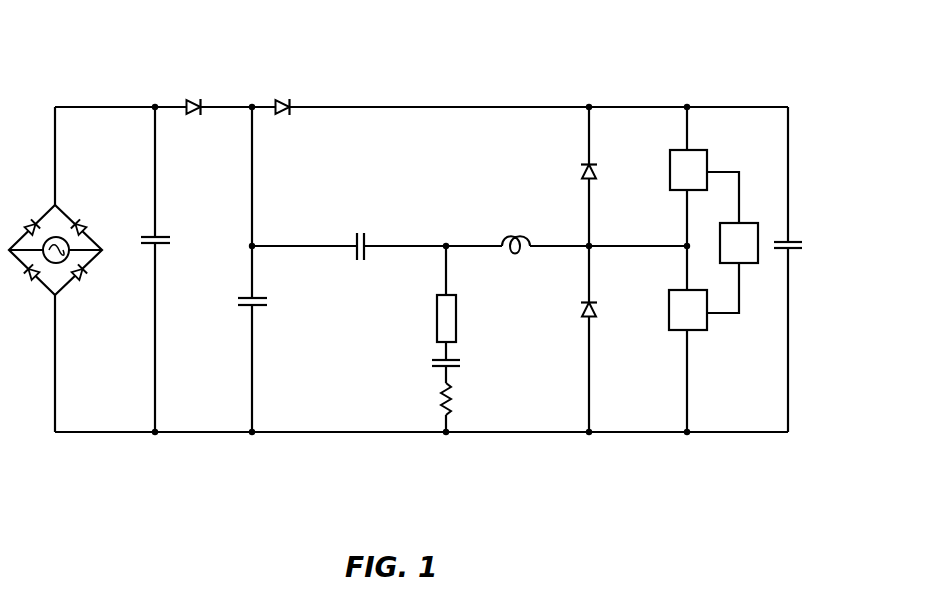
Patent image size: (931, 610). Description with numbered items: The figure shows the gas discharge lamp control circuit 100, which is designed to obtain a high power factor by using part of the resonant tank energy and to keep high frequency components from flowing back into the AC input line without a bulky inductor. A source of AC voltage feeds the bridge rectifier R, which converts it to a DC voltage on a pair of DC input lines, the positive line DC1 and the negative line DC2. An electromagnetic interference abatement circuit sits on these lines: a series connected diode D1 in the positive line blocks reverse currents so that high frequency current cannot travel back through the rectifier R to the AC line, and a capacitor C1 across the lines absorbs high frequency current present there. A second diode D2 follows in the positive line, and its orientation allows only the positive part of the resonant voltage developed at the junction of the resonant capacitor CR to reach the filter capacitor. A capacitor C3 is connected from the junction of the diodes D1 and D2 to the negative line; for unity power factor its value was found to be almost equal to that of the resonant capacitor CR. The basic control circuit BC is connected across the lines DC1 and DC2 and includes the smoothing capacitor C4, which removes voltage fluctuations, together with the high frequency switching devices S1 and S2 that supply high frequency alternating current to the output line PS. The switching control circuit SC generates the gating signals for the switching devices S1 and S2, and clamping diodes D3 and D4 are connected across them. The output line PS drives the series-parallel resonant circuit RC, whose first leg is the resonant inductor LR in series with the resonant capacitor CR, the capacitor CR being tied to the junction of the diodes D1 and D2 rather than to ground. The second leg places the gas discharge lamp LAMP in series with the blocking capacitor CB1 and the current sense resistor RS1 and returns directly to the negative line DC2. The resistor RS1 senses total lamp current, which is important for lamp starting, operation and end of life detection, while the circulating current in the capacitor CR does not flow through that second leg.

The gas discharge lamp control circuit 100 is at (530, 80).
The DC input line DC1 is at (118, 106).
The DC input line DC2 is at (108, 433).
The bridge rectifier R is at (31, 300).
The capacitor C1 is at (146, 245).
The diode D1 is at (190, 116).
The diode D2 is at (281, 98).
The capacitor C3 is at (262, 310).
The resonant capacitor CR is at (355, 238).
The resonant inductor LR is at (528, 242).
The output line PS is at (636, 248).
The gas discharge lamp LAMP is at (436, 308).
The blocking capacitor CB1 is at (438, 368).
The current sense resistor RS1 is at (480, 402).
The series-parallel resonant circuit RC is at (448, 370).
The clamping diode D3 is at (600, 167).
The clamping diode D4 is at (594, 312).
The high frequency switching device S1 is at (708, 161).
The high frequency switching device S2 is at (708, 328).
The switching control circuit SC is at (757, 223).
The smoothing capacitor C4 is at (800, 243).
The basic control circuit BC is at (540, 324).